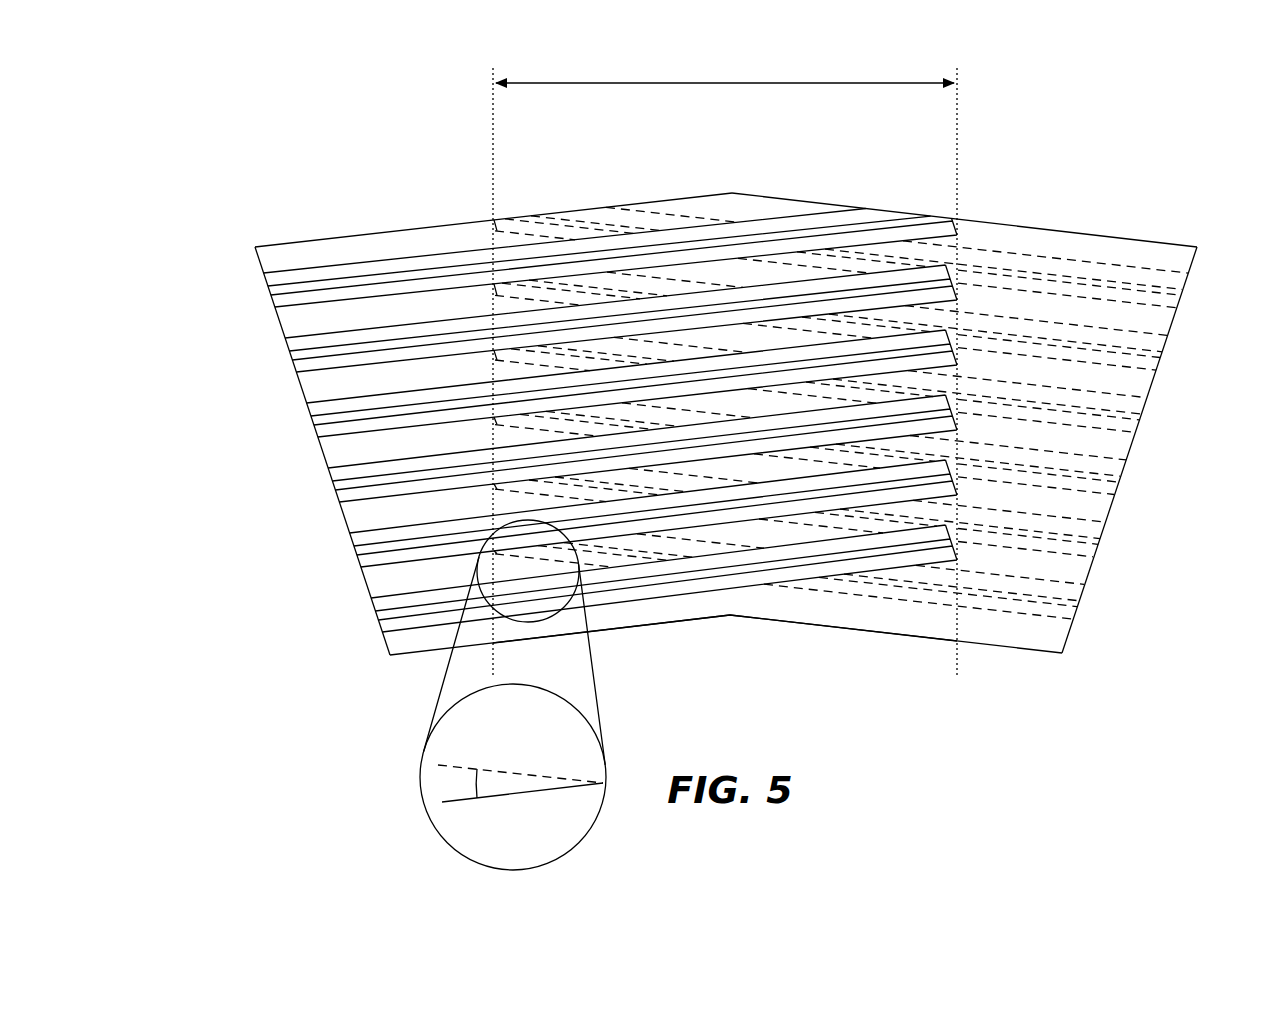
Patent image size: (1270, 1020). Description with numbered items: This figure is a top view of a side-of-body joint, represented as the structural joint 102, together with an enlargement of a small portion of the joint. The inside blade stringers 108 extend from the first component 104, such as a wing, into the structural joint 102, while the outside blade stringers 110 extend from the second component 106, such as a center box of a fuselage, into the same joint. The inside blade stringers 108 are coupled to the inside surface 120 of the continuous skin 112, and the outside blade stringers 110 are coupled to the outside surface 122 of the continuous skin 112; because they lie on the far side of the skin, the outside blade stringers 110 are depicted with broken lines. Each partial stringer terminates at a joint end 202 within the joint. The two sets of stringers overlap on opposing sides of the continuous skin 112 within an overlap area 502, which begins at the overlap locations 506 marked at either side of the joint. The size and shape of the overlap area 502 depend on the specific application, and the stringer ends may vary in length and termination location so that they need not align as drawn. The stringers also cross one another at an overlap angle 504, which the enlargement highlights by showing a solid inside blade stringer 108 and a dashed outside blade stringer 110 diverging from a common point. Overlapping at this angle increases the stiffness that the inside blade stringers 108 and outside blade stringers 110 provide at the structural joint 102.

The structural joint 102 is at (698, 382).
The first component 104 is at (458, 436).
The second component 106 is at (987, 437).
The inside blade stringers 108 is at (805, 213).
The outside blade stringers 110 is at (668, 214).
The continuous skin 112 is at (442, 650).
The inside surface 120 is at (271, 258).
The outside surface 122 is at (1202, 256).
The joint end 202 is at (637, 610).
The overlap area 502 is at (725, 69).
The overlap angle 504 is at (456, 783).
The overlap locations 506 is at (490, 158).